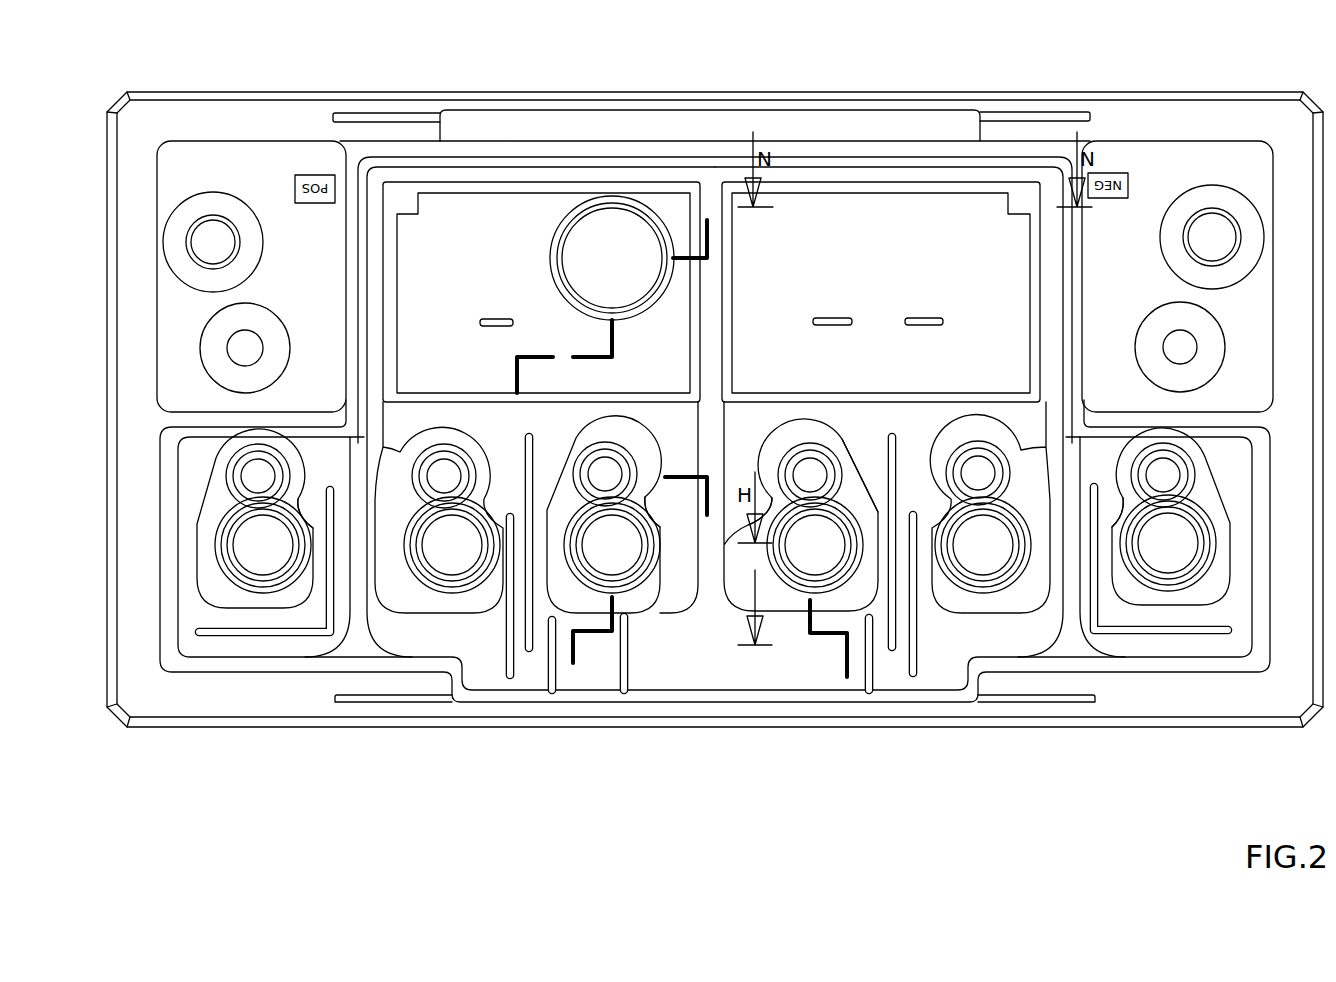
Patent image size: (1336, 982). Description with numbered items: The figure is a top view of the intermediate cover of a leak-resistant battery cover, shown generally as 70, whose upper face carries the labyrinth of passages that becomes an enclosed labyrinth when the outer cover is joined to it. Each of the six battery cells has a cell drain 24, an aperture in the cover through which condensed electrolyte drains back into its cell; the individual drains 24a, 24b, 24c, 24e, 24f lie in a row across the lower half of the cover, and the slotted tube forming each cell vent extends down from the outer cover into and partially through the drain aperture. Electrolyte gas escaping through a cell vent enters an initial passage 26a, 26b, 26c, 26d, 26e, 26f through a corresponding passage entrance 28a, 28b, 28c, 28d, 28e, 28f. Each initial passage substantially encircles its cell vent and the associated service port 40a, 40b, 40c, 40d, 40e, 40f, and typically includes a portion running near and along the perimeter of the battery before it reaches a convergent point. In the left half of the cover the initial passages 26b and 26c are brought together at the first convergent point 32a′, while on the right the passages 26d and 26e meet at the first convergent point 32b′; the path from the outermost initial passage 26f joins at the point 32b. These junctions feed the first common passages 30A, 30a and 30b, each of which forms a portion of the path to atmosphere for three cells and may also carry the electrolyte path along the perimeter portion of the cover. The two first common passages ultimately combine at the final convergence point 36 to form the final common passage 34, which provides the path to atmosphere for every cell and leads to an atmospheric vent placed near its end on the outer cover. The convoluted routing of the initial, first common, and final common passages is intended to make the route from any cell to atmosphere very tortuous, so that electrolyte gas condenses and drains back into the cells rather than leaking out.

The battery container / cover 70 is at (100, 305).
The first common passage 30A is at (374, 182).
The first common passage 30a is at (400, 648).
The first common passage 30b is at (943, 173).
The final convergence point 36 is at (710, 173).
The final common passage 34 is at (710, 272).
The cell drain 24 is at (818, 477).
The cell drain 24a is at (257, 478).
The cell drain 24b is at (440, 477).
The cell drain 24c is at (603, 472).
The cell drain 24e is at (982, 473).
The cell drain 24f is at (1153, 473).
The initial passage 26a is at (257, 477).
The initial passage 26b is at (408, 447).
The initial passage 26c is at (628, 428).
The initial passage 26d is at (783, 447).
The initial passage 26e is at (943, 450).
The initial passage 26f is at (1135, 443).
The passage entrance 28a is at (293, 507).
The passage entrance 28b is at (522, 334).
The passage entrance 28c is at (665, 487).
The passage entrance 28d is at (777, 497).
The passage entrance 28e is at (882, 488).
The passage entrance 28f is at (1137, 495).
The service port 40a is at (290, 560).
The service port 40b is at (479, 560).
The service port 40c is at (639, 560).
The service port 40d is at (842, 560).
The service port 40e is at (1010, 560).
The service port 40f is at (1195, 558).
The first convergent point 32a′ is at (515, 680).
The first convergent point 32b′ is at (913, 682).
The convergent point 32b is at (1067, 630).